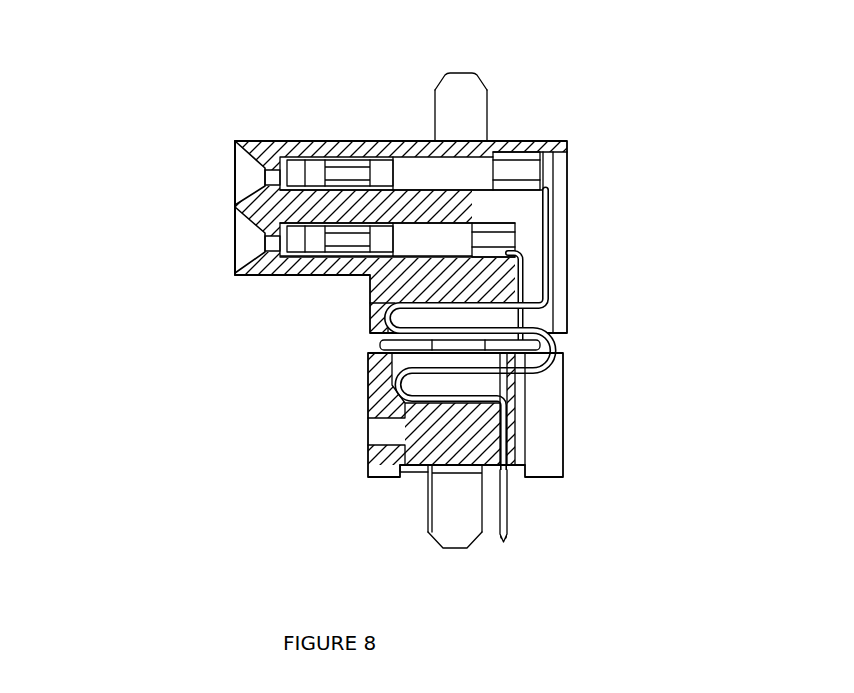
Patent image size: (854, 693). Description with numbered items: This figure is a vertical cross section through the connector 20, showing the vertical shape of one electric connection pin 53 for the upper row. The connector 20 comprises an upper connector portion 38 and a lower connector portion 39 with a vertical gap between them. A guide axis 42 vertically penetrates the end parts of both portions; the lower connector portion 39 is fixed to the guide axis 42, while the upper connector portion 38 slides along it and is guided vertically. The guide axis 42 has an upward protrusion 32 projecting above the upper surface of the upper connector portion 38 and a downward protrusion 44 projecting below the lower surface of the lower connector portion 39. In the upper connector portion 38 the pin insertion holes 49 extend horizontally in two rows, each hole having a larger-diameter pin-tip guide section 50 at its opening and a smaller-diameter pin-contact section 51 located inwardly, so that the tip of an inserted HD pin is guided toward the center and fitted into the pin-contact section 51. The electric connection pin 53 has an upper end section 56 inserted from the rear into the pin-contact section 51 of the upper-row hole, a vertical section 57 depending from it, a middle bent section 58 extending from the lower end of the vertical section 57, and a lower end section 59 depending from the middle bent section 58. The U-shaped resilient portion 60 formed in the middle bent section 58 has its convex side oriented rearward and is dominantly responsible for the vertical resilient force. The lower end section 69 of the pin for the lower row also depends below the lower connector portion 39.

The connector 20 is at (168, 261).
The upward protrusion 32 is at (433, 112).
The upper connector portion 38 is at (242, 134).
The lower connector portion 39 is at (353, 408).
The guide axis 42 is at (500, 112).
The downward protrusion 44 is at (457, 497).
The pin insertion hole 49 is at (222, 236).
The pin-tip guide section 50 is at (242, 253).
The pin-contact section 51 is at (348, 244).
The electric connection pin for upper row 53 is at (565, 277).
The upper end section 56 is at (518, 168).
The vertical section 57 is at (549, 240).
The middle bent section 58 is at (549, 346).
The lower end section 59 is at (508, 498).
The U-shaped resilient portion 60 is at (541, 369).
The lower end section 69 is at (424, 501).